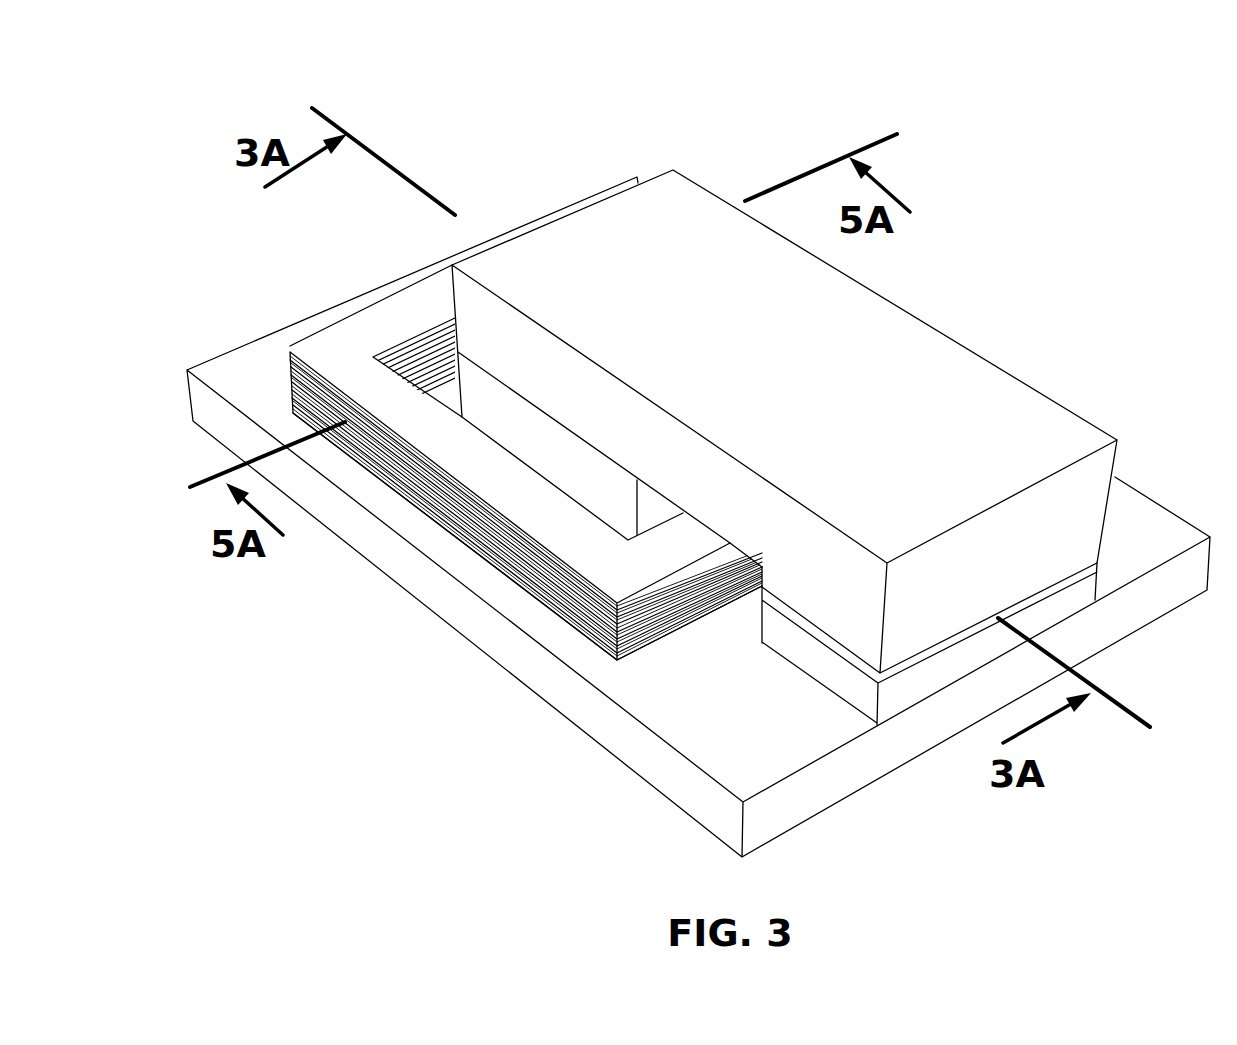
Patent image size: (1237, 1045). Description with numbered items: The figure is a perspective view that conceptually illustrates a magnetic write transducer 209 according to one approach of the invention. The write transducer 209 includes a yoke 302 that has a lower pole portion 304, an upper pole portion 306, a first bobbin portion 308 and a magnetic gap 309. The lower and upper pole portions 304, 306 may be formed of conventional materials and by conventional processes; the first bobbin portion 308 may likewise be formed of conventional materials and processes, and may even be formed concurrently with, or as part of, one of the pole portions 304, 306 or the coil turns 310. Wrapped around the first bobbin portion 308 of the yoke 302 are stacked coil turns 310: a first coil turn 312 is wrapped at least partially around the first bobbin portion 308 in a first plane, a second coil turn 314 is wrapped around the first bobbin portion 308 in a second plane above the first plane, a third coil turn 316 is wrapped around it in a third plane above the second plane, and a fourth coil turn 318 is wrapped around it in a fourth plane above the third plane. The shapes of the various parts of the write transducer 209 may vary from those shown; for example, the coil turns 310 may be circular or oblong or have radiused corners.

The magnetic write transducer 209 is at (667, 447).
The yoke 302 is at (824, 447).
The lower pole portion 304 is at (570, 703).
The upper pole portion 306 is at (985, 402).
The first bobbin portion 308 is at (443, 425).
The magnetic gap 309 is at (1100, 567).
The coil turns 310 is at (330, 355).
The first coil turn 312 is at (293, 413).
The second coil turn 314 is at (293, 400).
The third coil turn 316 is at (293, 395).
The fourth coil turn 318 is at (293, 403).